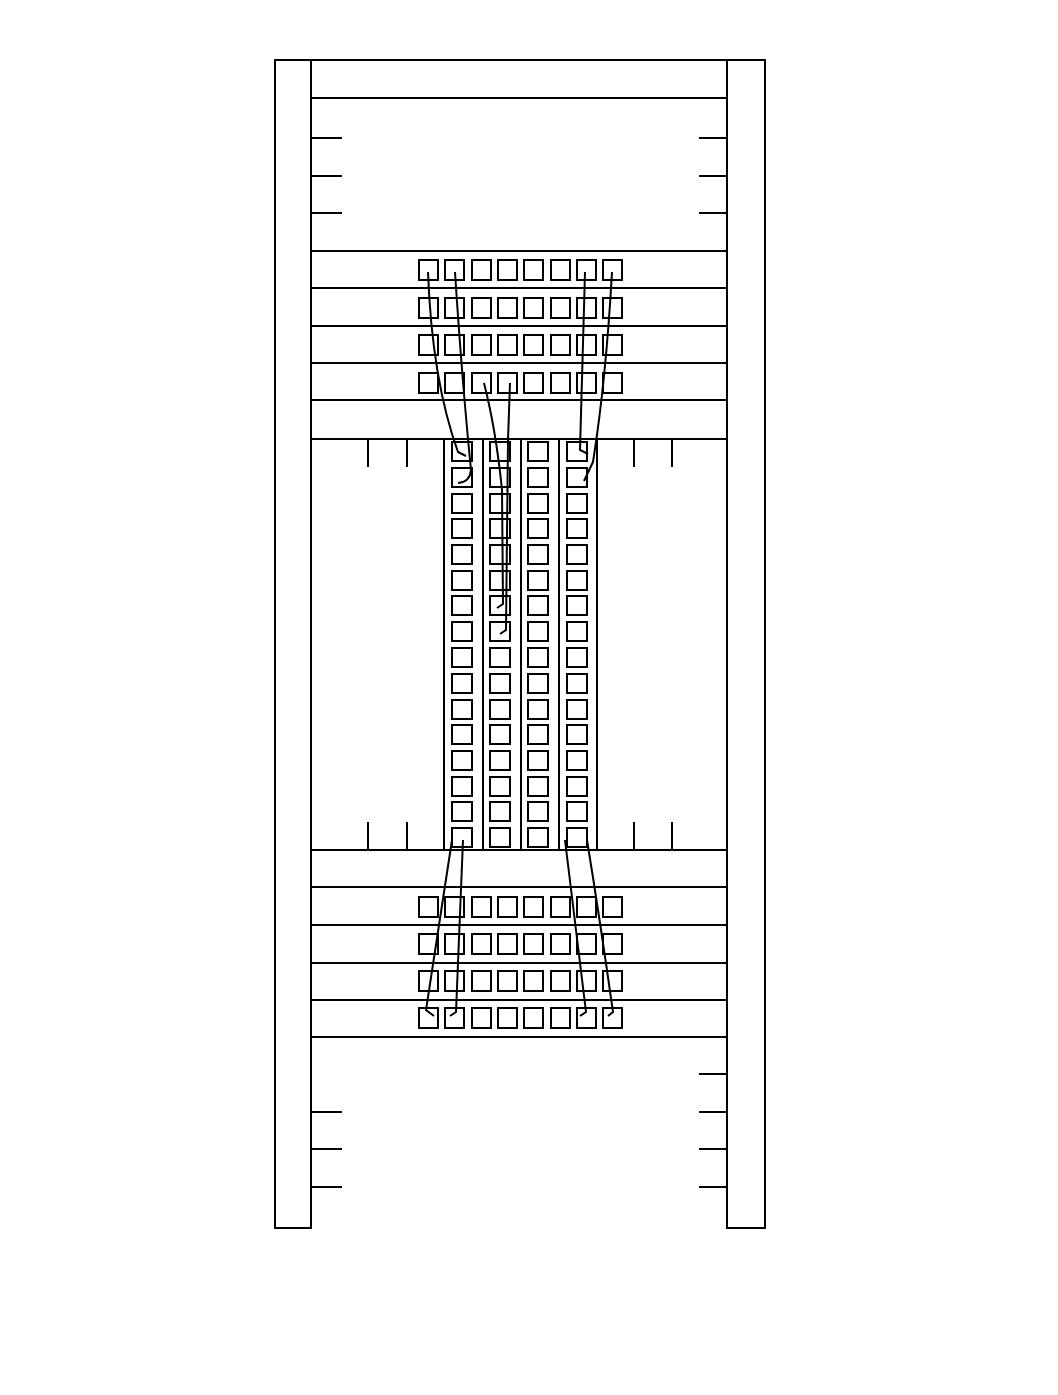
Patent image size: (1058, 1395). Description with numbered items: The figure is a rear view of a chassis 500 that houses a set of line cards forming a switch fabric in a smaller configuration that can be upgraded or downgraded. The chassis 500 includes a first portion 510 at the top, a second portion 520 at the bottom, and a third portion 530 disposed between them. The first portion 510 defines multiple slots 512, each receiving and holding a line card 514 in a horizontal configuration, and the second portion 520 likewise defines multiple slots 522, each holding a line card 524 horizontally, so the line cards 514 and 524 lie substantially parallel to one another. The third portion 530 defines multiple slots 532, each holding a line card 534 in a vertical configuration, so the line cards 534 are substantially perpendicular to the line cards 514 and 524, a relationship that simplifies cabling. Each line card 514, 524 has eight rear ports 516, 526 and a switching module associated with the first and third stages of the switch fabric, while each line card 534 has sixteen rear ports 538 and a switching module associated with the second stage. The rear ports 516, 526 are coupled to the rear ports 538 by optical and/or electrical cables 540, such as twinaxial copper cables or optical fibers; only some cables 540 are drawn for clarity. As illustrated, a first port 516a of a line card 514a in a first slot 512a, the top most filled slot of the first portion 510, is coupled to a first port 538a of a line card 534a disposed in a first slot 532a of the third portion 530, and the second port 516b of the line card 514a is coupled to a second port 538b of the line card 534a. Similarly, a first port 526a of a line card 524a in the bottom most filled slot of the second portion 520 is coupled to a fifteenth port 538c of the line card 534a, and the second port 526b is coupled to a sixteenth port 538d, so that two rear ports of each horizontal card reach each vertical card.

The chassis 500 is at (216, 73).
The first portion 510 is at (607, 200).
The slots 512 is at (337, 160).
The first slot 512a is at (728, 268).
The line card 514 is at (337, 345).
The line card 514a is at (327, 275).
The rear ports 516 is at (616, 306).
The first port 516a is at (421, 267).
The second port 516b is at (459, 282).
The second portion 520 is at (362, 1068).
The slots 522 is at (730, 980).
The line card 524 is at (322, 973).
The line card 524a is at (728, 1027).
The rear ports 526 is at (423, 908).
The first port 526a is at (422, 1020).
The second port 526b is at (455, 1018).
The third portion 530 is at (654, 681).
The slots 532 is at (655, 835).
The first slot 532a is at (443, 523).
The line card 534 is at (590, 542).
The line card 534a is at (447, 672).
The rear ports 538 is at (577, 606).
The first port 538a is at (452, 452).
The second port 538b is at (457, 483).
The fifteenth port 538c is at (460, 808).
The sixteenth port 538d is at (455, 841).
The cables 540 is at (606, 403).